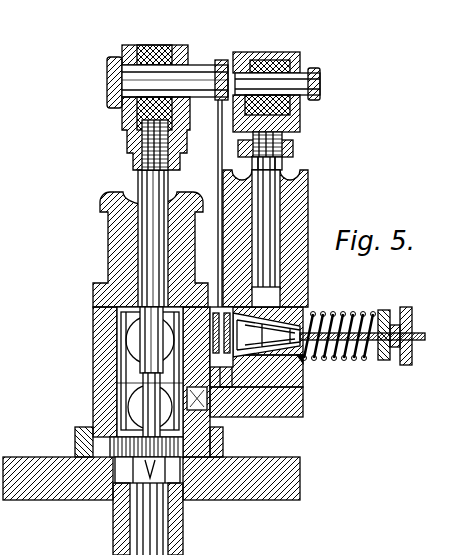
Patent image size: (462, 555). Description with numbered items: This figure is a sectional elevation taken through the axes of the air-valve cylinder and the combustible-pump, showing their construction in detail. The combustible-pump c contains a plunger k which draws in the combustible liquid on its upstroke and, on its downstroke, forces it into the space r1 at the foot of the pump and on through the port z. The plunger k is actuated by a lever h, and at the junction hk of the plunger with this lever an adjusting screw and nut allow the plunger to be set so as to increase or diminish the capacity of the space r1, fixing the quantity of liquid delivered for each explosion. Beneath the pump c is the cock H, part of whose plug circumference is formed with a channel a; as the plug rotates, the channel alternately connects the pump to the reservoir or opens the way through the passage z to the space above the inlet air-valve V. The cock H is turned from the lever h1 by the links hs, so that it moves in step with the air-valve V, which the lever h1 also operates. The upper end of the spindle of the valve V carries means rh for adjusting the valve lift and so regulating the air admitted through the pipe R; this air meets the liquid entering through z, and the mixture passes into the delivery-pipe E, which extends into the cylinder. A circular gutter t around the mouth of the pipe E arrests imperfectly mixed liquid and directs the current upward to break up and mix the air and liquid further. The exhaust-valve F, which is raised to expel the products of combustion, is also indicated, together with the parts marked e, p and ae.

The lever h1 is at (124, 52).
The means for adjusting the lift of the valve rh is at (142, 157).
The links hs is at (219, 138).
The pipe R is at (120, 337).
The valve chamber e is at (117, 383).
The threaded ring p is at (128, 458).
The air-valve V is at (147, 470).
The circular gutter t is at (112, 493).
The lever h is at (302, 67).
The delivery-pipe E is at (268, 56).
The junction of the plunger with the lever hk is at (292, 150).
The plunger k is at (298, 174).
The combustible-pump c is at (297, 215).
The space at the foot of the pump r1 is at (266, 297).
The cock H is at (303, 300).
The channel a is at (301, 361).
The port z is at (197, 398).
The exhaust-valve F is at (250, 417).
The spring rod ae is at (418, 337).